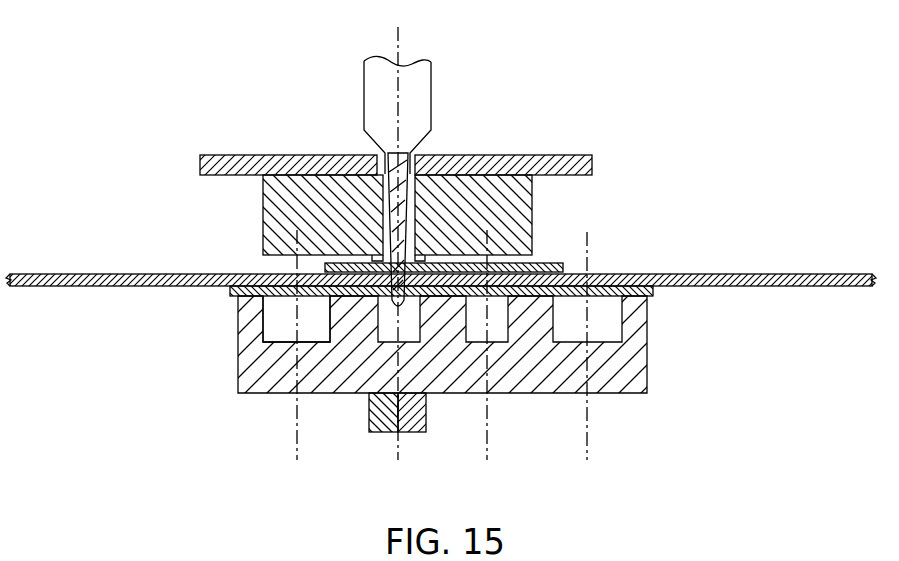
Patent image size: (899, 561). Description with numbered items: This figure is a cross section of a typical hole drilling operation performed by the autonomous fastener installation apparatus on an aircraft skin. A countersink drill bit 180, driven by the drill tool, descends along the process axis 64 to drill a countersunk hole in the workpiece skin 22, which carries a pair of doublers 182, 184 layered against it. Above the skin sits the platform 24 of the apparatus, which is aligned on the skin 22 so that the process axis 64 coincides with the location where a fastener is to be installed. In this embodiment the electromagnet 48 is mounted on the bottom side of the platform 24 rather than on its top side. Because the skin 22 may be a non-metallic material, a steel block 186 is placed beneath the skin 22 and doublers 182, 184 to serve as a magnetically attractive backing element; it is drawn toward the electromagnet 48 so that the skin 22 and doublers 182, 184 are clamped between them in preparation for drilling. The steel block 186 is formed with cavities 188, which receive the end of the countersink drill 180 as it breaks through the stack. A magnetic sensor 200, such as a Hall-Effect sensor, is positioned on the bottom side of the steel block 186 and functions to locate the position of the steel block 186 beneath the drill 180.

The process axis 64 is at (397, 40).
The countersink drill bit 180 is at (418, 102).
The platform 24 is at (557, 156).
The electromagnet 48 is at (522, 200).
The doubler 182 is at (555, 264).
The skin 22 is at (78, 275).
The doubler 184 is at (650, 297).
The steel block 186 is at (260, 373).
The cavities 188 is at (280, 316).
The magnetic sensor 200 is at (369, 418).